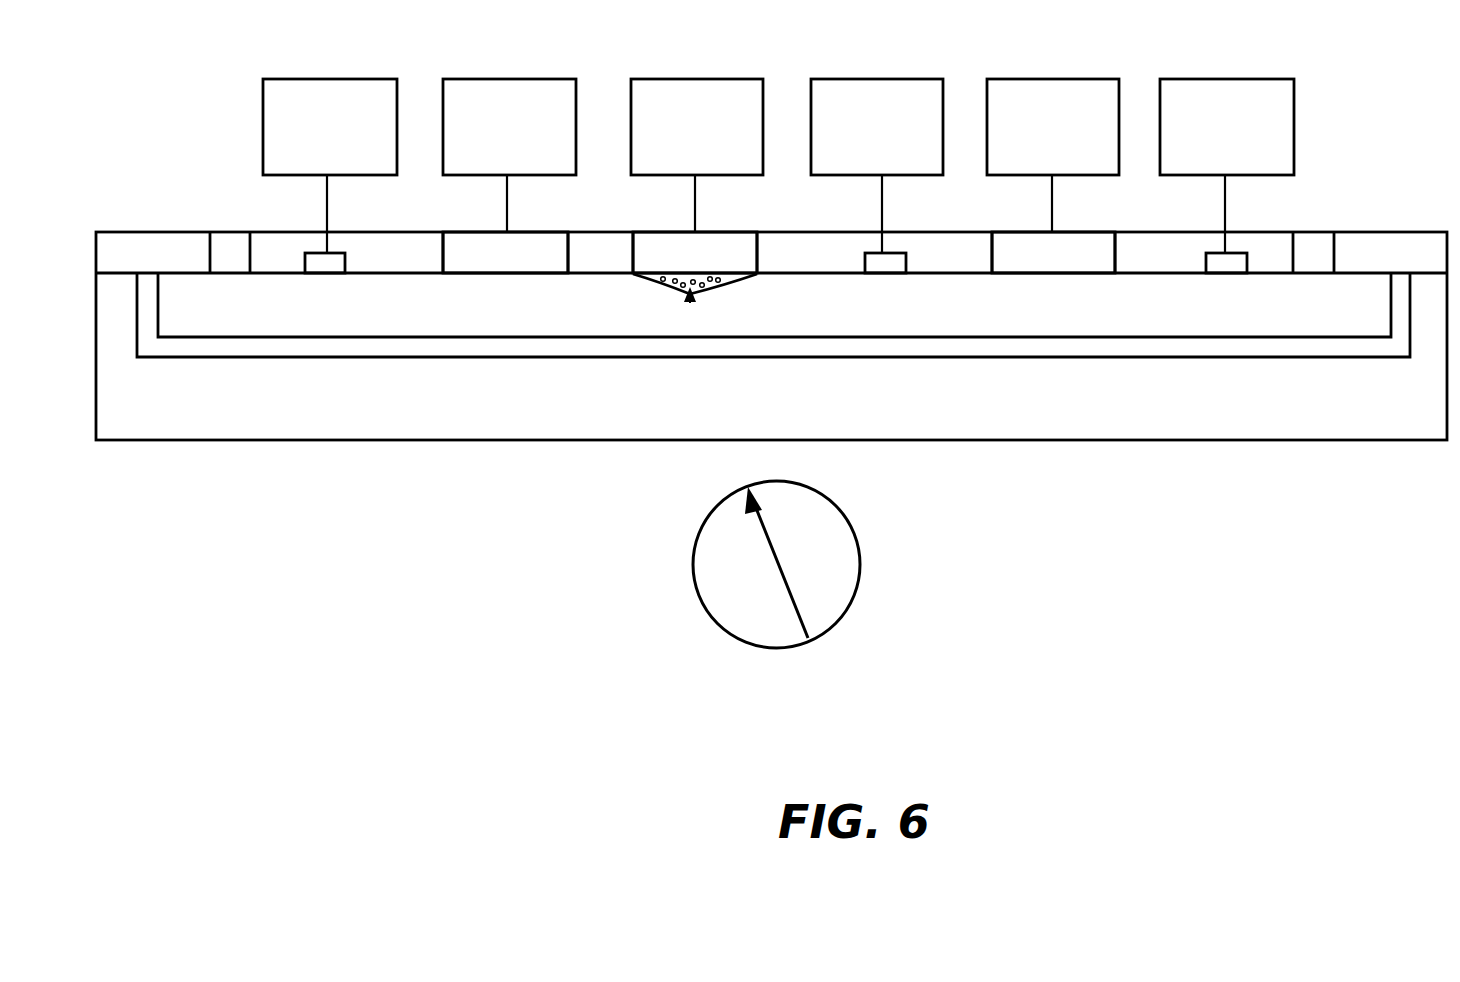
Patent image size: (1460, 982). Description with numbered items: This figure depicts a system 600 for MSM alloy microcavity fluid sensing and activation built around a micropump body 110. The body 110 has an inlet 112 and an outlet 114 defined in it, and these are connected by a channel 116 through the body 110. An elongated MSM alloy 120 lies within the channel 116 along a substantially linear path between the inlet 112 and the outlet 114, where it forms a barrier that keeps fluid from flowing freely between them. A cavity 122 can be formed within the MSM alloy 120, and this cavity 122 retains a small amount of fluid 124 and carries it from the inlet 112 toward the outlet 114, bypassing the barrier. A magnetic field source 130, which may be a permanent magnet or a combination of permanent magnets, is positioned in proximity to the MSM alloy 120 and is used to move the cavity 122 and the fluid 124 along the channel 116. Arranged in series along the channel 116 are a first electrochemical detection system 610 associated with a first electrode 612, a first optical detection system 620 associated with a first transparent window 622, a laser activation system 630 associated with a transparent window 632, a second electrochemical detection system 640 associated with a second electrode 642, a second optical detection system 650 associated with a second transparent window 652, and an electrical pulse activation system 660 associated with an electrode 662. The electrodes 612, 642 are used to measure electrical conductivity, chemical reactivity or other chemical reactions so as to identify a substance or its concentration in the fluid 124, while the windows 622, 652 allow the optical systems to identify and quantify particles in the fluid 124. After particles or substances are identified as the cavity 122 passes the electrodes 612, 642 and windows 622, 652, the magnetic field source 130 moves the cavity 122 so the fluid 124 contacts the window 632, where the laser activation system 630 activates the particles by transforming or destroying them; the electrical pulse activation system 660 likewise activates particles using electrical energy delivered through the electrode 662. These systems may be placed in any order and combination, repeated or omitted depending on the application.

The system 600 is at (200, 88).
The micropump body 110 is at (170, 230).
The inlet 112 is at (230, 230).
The outlet 114 is at (1310, 232).
The channel 116 is at (218, 358).
The MSM alloy 120 is at (363, 337).
The cavity 122 is at (672, 295).
The fluid 124 is at (693, 303).
The magnetic field source 130 is at (713, 620).
The first electrochemical detection system 610 is at (330, 78).
The first electrode 612 is at (328, 275).
The first optical detection system 620 is at (505, 78).
The first transparent window 622 is at (513, 275).
The laser activation system 630 is at (688, 78).
The transparent window 632 is at (714, 232).
The second electrochemical detection system 640 is at (878, 78).
The second electrode 642 is at (888, 275).
The second optical detection system 650 is at (1052, 78).
The second transparent window 652 is at (1052, 275).
The electrical pulse activation system 660 is at (1225, 78).
The electrode 662 is at (1225, 275).